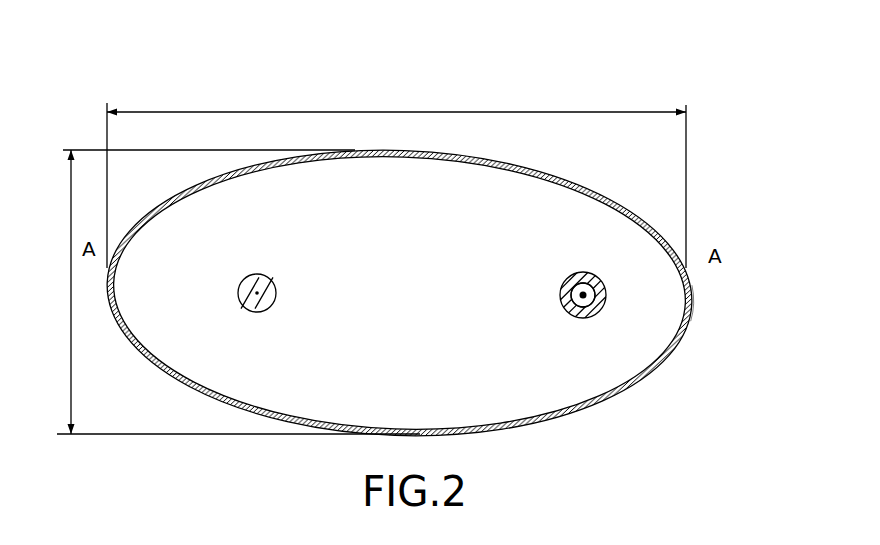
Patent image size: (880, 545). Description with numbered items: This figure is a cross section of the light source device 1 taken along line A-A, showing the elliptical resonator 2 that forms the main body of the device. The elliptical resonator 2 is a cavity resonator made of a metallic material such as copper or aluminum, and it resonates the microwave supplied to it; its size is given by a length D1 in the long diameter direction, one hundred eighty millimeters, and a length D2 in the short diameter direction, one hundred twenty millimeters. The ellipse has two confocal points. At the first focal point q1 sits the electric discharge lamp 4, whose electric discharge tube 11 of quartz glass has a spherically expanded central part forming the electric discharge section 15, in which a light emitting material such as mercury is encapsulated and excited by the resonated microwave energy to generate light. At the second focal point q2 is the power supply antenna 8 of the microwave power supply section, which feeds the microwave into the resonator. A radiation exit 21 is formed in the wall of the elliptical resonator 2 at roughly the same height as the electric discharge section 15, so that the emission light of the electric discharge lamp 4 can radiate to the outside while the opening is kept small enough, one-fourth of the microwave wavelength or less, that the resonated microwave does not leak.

The light source device 1 is at (698, 85).
The elliptical resonator 2 is at (585, 178).
The radiation exit 21 is at (690, 297).
The electric discharge lamp 4 is at (604, 314).
The power supply antenna 8 is at (273, 300).
The electric discharge tube 11 is at (592, 273).
The electric discharge section 15 is at (579, 295).
The first focal point q1 is at (583, 297).
The second focal point q2 is at (257, 293).
The length in long diameter direction D1 is at (396, 178).
The length in short diameter direction D2 is at (232, 292).